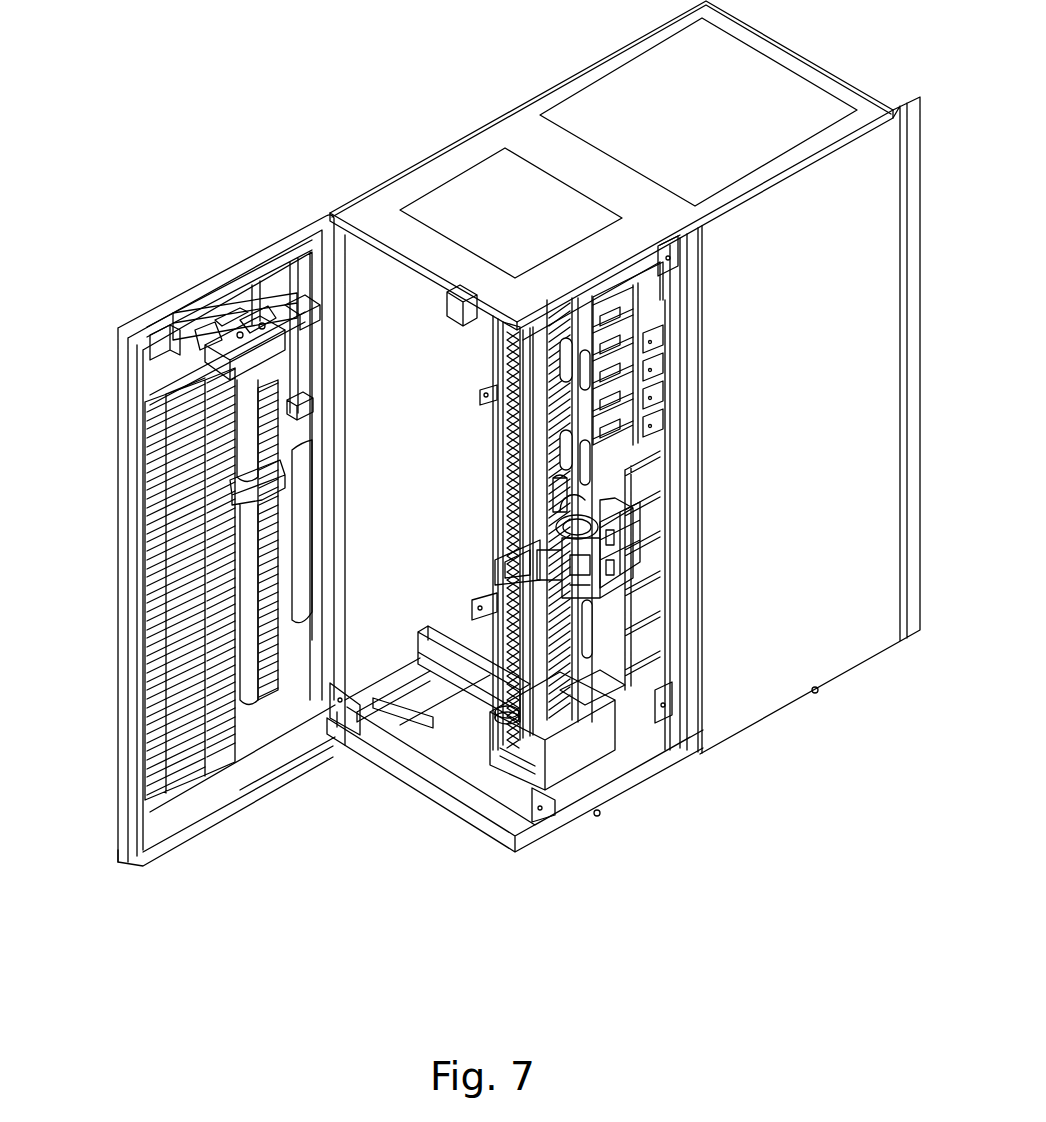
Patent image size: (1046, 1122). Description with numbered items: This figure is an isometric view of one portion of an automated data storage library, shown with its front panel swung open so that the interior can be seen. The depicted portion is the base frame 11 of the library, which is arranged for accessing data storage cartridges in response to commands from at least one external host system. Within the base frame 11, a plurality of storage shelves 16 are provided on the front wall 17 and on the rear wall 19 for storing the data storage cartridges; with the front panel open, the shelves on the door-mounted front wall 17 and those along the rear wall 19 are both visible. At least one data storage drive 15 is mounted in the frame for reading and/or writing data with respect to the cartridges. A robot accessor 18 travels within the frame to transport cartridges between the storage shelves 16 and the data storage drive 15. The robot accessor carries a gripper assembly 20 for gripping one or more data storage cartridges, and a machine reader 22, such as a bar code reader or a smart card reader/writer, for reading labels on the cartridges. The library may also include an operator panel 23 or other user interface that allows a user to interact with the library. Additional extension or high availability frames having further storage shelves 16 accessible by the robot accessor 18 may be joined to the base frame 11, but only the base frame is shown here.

The base frame 11 is at (394, 866).
The data storage drive 15 is at (655, 320).
The storage shelves 16 is at (500, 447).
The front wall 17 is at (128, 511).
The robot accessor 18 is at (560, 765).
The rear wall 19 is at (495, 363).
The gripper assembly 20 is at (650, 542).
The machine reader 22 is at (535, 578).
The operator panel 23 is at (300, 349).